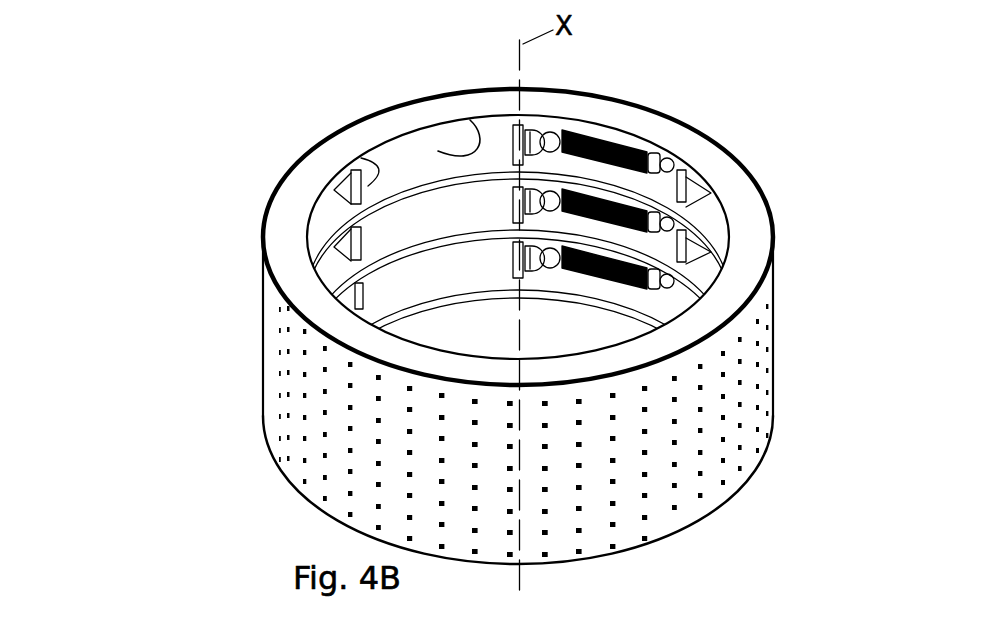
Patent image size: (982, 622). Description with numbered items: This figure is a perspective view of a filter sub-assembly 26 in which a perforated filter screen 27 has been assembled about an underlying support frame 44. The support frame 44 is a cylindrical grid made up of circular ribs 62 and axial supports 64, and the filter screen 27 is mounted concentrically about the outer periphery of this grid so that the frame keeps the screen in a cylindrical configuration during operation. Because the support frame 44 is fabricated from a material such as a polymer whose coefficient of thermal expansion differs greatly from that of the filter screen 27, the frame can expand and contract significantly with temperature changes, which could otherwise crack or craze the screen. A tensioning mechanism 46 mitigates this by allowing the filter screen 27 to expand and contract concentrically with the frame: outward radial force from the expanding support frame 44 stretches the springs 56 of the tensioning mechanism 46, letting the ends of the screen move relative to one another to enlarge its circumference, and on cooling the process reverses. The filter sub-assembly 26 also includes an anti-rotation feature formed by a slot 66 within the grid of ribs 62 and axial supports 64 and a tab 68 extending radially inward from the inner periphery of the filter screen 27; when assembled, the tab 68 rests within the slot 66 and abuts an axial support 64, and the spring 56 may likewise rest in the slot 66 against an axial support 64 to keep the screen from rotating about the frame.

The filter sub-assembly 26 is at (183, 133).
The filter screen 27 is at (748, 380).
The support frame 44 is at (755, 222).
The tensioning mechanism 46 is at (660, 223).
The spring 56 is at (620, 140).
The circular ribs 62 is at (340, 192).
The axial supports 64 is at (509, 134).
The slot 66 is at (478, 128).
The tab 68 is at (535, 137).